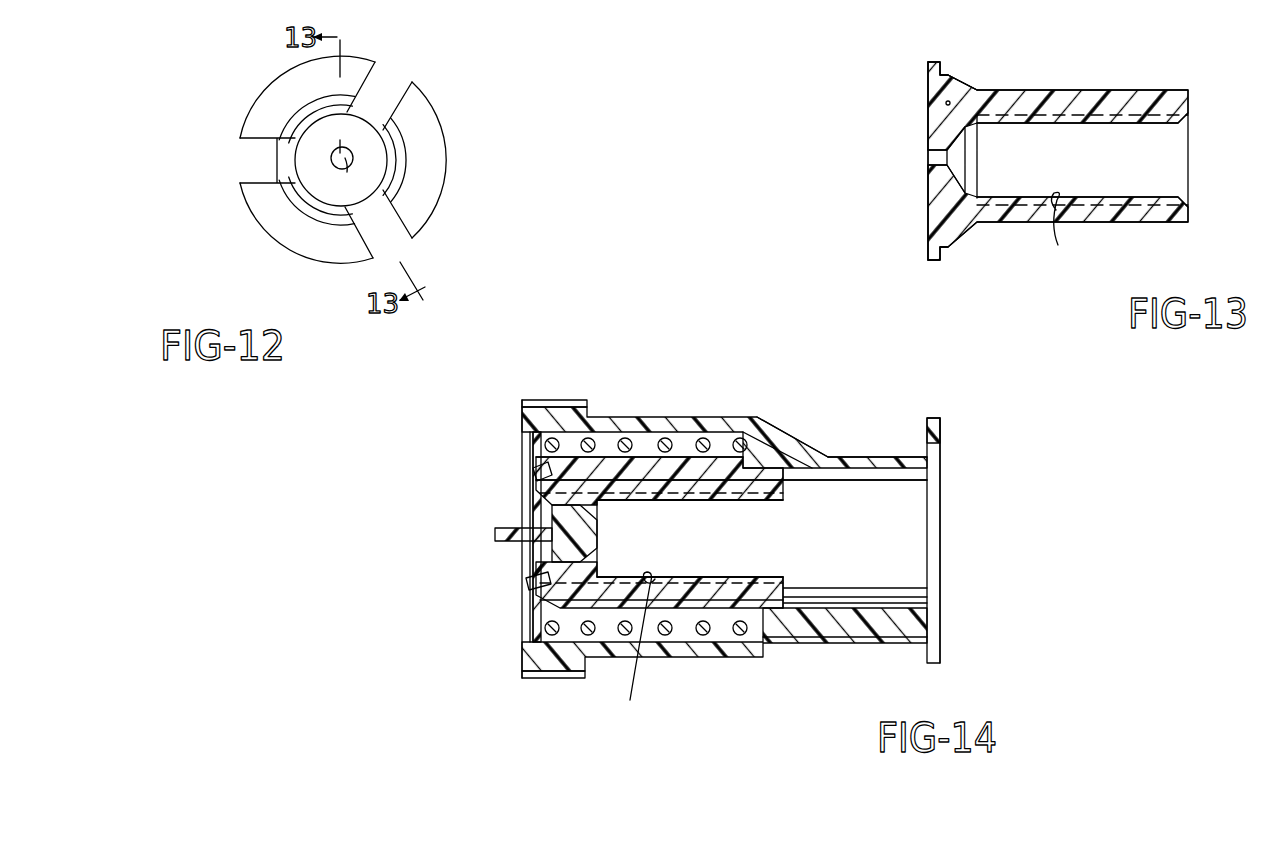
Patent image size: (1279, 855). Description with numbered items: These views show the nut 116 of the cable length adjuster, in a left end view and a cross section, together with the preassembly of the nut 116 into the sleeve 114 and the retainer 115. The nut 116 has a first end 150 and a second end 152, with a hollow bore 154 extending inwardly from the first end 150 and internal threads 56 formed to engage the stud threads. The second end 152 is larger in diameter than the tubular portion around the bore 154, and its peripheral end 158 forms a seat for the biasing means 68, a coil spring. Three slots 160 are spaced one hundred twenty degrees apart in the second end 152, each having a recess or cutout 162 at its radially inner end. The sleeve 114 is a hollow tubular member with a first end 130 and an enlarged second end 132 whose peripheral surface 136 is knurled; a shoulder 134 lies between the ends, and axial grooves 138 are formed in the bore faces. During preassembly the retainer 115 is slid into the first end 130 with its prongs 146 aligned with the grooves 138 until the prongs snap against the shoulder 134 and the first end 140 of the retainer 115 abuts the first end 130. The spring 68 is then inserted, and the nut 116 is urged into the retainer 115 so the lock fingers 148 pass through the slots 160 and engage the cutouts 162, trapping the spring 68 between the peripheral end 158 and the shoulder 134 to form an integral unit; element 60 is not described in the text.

In FIG. 13, the internal threads 56 is at (1058, 245).
In FIG. 14, the internal threads 56 is at (630, 700).
In FIG. 14, the fitting 60 is at (503, 520).
In FIG. 14, the biasing means 68 is at (645, 448).
In FIG. 14, the sleeve 114 is at (754, 401).
In FIG. 14, the retainer 115 is at (688, 458).
In FIG. 12, the nut 116 is at (238, 89).
In FIG. 13, the nut 116 is at (1118, 50).
In FIG. 14, the nut 116 is at (547, 472).
In FIG. 14, the first end of the sleeve 130 is at (905, 456).
In FIG. 14, the second end of the sleeve 132 is at (522, 422).
In FIG. 14, the shoulder 134 is at (745, 462).
In FIG. 14, the peripheral surface 136 is at (544, 398).
In FIG. 14, the grooves 138 is at (868, 468).
In FIG. 14, the first end of the retainer 140 is at (941, 464).
In FIG. 14, the prongs 146 is at (816, 467).
In FIG. 14, the lock finger 148 is at (532, 473).
In FIG. 13, the first end of the nut 150 is at (1170, 126).
In FIG. 14, the first end of the nut 150 is at (763, 573).
In FIG. 13, the second end of the nut 152 is at (930, 88).
In FIG. 14, the second end of the nut 152 is at (533, 442).
In FIG. 13, the bore 154 is at (1170, 187).
In FIG. 14, the bore 154 is at (683, 462).
In FIG. 12, the peripheral end 158 is at (450, 172).
In FIG. 13, the peripheral end 158 is at (937, 60).
In FIG. 14, the peripheral end 158 is at (535, 437).
In FIG. 12, the slots 160 is at (398, 95).
In FIG. 12, the recess or cutout 162 is at (380, 110).
In FIG. 13, the recess or cutout 162 is at (950, 102).